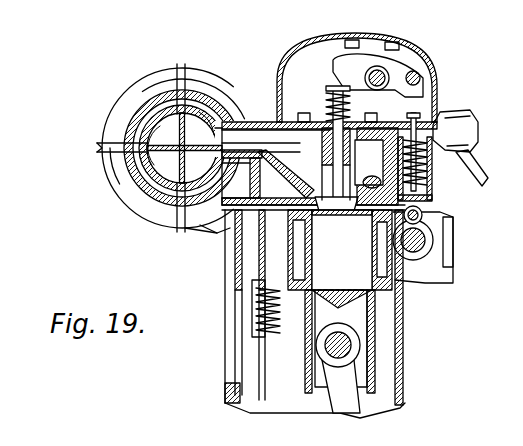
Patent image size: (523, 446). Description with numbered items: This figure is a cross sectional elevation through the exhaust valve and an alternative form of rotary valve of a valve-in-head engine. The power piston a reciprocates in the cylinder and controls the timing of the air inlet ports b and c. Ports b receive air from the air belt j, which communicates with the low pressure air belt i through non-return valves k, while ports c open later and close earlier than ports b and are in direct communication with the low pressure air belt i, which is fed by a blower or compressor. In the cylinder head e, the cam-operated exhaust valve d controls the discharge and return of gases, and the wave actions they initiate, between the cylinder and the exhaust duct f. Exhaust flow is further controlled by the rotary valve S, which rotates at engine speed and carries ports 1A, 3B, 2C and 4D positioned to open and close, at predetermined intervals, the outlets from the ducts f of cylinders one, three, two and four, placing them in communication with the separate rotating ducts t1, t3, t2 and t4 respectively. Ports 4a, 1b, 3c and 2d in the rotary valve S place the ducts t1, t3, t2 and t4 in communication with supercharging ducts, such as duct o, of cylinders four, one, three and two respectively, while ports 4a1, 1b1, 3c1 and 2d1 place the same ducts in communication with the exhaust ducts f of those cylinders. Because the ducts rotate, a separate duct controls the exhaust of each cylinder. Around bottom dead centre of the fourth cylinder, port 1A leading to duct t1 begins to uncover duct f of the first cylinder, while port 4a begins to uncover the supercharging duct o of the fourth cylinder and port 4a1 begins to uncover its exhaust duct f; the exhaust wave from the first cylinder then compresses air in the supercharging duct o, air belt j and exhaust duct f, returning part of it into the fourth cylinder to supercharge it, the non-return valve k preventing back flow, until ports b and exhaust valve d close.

The port 1b is at (174, 75).
The port 1b1 is at (163, 53).
The port 1A is at (188, 68).
The port 3B is at (104, 111).
The rotary valve S is at (200, 111).
The port 4a is at (253, 60).
The port 4a1 is at (280, 76).
The rotating duct t3 is at (160, 128).
The rotating duct t1 is at (192, 148).
The rotating duct t4 is at (184, 163).
The port 3c is at (112, 172).
The port 3c1 is at (63, 172).
The port 2C is at (110, 207).
The rotating duct t2 is at (176, 222).
The port 2d is at (217, 233).
The port 2d1 is at (163, 248).
The port 4D is at (233, 263).
The air inlet port b is at (305, 292).
The non-return valve k is at (258, 320).
The air belt j is at (261, 305).
The low pressure air belt i is at (278, 387).
The exhaust duct f is at (325, 178).
The exhaust valve d is at (331, 212).
The supercharging duct o is at (278, 252).
The air inlet port c is at (368, 291).
The power piston a is at (353, 318).
The cylinder head e is at (413, 186).